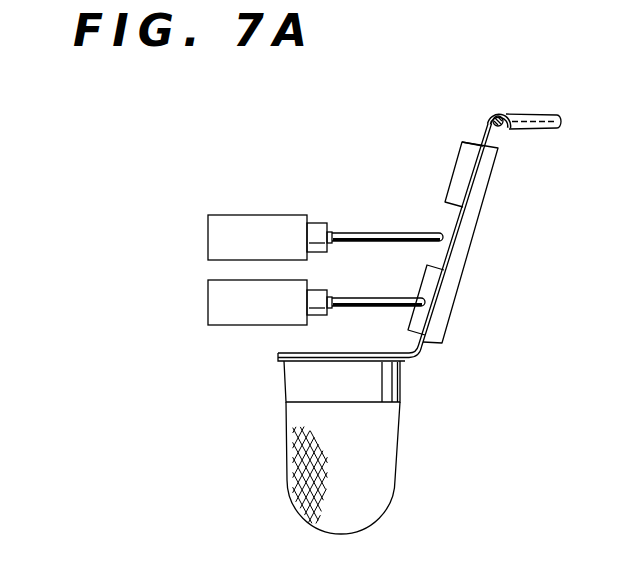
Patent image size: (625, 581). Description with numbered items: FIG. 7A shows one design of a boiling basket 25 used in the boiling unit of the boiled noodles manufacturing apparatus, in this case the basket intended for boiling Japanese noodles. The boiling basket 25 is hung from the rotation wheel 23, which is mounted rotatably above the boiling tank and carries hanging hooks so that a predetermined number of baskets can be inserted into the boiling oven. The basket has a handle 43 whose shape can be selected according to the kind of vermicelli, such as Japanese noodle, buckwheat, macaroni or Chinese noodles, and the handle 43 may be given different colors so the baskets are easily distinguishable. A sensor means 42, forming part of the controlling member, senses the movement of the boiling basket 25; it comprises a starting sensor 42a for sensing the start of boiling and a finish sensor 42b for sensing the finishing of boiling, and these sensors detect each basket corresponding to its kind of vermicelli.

The rotation wheel 23 is at (497, 110).
The handle 43 is at (467, 228).
The sensor means 42 is at (233, 270).
The starting sensor 42a is at (213, 232).
The finish sensor 42b is at (213, 307).
The boiling basket 25 is at (388, 435).